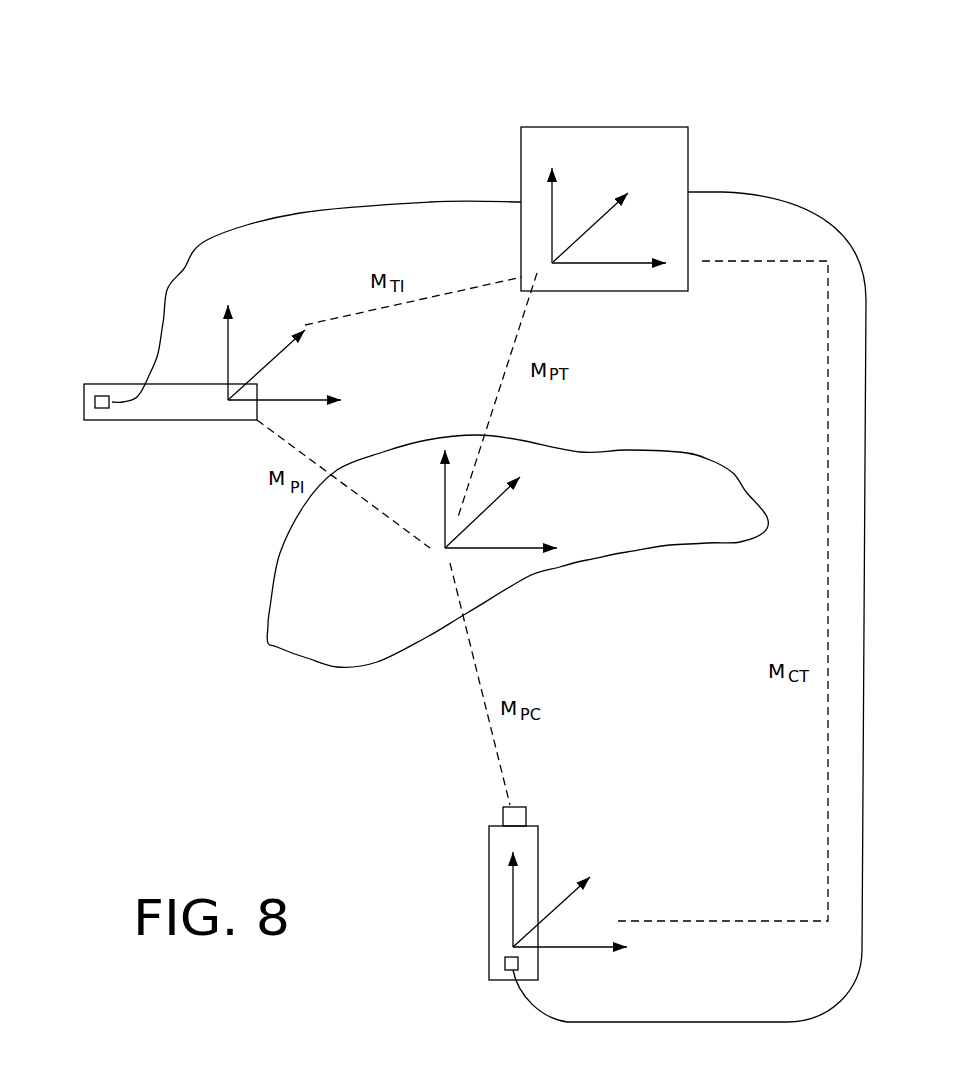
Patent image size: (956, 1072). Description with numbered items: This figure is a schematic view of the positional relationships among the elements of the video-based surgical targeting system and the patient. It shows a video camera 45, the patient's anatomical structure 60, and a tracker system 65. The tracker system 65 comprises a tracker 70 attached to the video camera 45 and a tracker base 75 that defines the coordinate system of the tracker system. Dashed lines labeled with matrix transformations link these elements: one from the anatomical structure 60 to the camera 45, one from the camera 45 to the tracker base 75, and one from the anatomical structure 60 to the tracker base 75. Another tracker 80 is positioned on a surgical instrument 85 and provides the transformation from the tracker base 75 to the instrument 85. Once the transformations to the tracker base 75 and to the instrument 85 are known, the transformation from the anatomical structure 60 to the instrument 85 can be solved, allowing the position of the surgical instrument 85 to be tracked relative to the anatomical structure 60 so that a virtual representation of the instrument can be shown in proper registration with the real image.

The tracker system 65 is at (343, 128).
The tracker base 75 is at (520, 150).
The surgical instrument 85 is at (94, 420).
The tracker 80 is at (102, 396).
The anatomical structure 60 is at (268, 643).
The video camera 45 is at (489, 875).
The tracker 70 is at (505, 963).